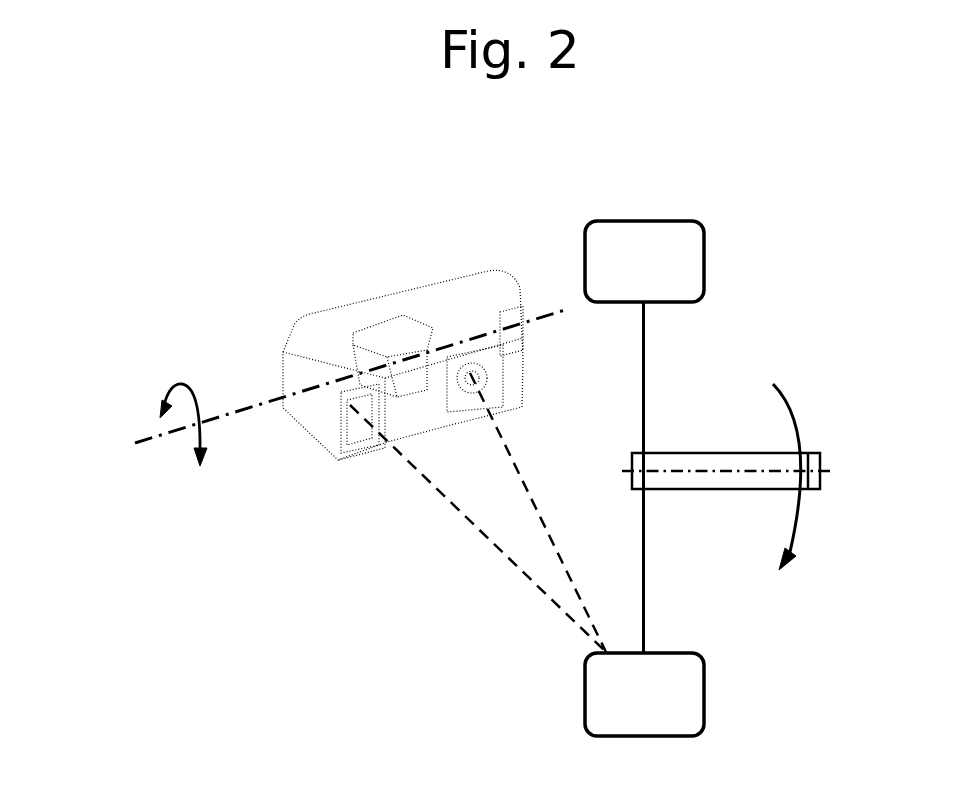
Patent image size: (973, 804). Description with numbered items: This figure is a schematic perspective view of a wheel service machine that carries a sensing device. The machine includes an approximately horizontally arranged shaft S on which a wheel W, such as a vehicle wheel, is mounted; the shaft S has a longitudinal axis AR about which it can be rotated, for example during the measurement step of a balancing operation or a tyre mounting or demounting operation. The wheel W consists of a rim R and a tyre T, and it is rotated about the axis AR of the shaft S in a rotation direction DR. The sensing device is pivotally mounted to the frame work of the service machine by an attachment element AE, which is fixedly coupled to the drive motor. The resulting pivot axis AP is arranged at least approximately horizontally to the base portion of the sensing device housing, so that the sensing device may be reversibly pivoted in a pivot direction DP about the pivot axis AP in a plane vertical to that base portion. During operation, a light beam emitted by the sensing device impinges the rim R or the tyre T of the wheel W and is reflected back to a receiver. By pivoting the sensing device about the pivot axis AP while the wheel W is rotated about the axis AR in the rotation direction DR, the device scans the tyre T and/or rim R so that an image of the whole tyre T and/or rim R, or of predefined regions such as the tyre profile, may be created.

The wheel W is at (814, 203).
The tyre T is at (657, 252).
The rim R is at (658, 347).
The shaft S is at (727, 492).
The longitudinal axis AR is at (830, 470).
The rotation direction DR is at (812, 537).
The pivot axis AP is at (245, 418).
The pivot direction DP is at (162, 393).
The attachment element AE is at (480, 322).